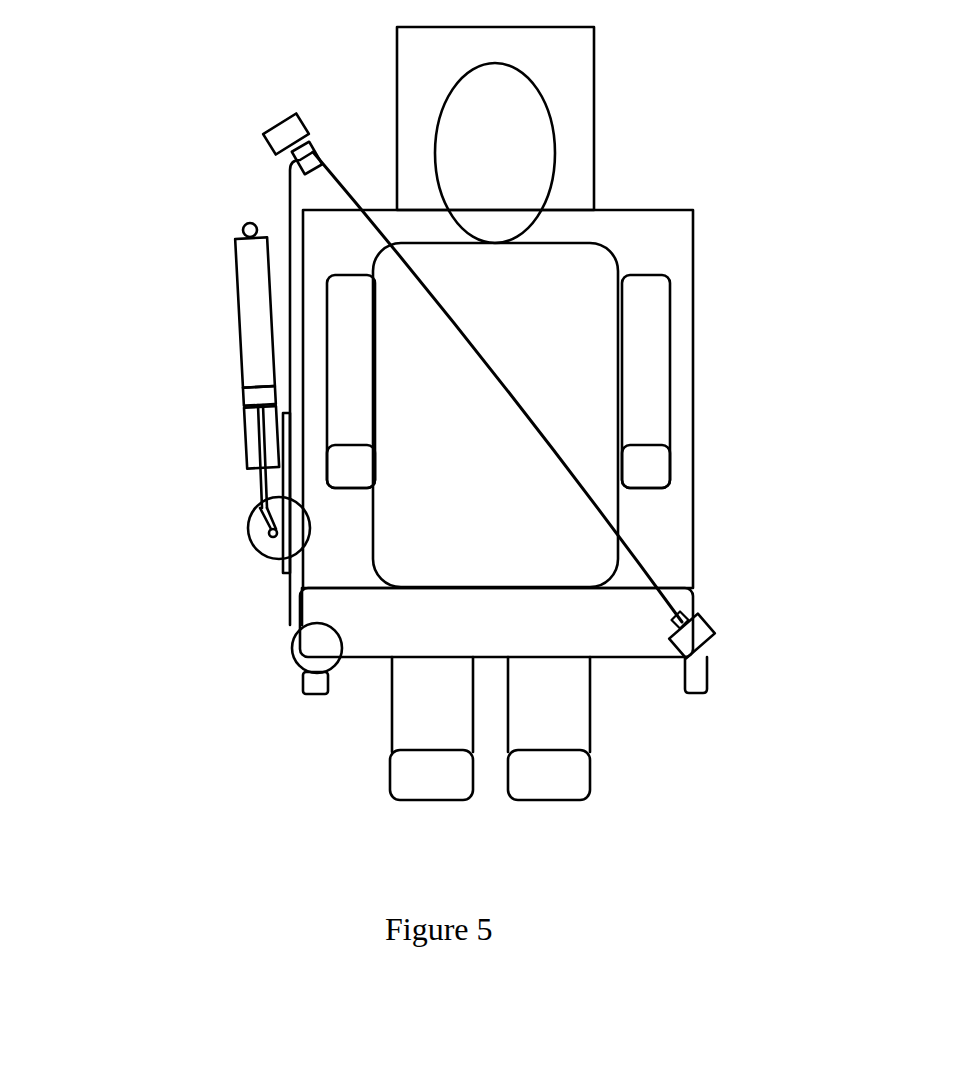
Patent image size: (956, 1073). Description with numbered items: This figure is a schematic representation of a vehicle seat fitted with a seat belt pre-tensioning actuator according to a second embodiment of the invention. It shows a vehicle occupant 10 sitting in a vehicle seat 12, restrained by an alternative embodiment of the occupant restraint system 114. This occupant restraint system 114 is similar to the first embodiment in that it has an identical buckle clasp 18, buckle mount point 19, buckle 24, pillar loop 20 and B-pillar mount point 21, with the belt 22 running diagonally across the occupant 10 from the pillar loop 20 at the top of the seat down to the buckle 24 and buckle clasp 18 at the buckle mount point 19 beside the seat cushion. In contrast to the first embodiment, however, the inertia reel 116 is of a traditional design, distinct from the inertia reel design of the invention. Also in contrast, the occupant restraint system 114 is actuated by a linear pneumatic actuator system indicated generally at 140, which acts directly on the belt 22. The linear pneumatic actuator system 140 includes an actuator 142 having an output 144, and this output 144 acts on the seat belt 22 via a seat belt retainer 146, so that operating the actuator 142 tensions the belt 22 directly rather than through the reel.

The vehicle occupant 10 is at (548, 313).
The vehicle seat 12 is at (711, 206).
The buckle clasp 18 is at (705, 632).
The buckle mount point 19 is at (705, 683).
The pillar loop 20 is at (307, 148).
The B-pillar mount point 21 is at (285, 133).
The belt 22 is at (291, 200).
The buckle 24 is at (690, 615).
The occupant restraint system 114 is at (431, 330).
The inertia reel 116 is at (305, 652).
The linear pneumatic actuator system 140 is at (168, 437).
The actuator 142 is at (240, 313).
The output 144 is at (261, 490).
The seat belt retainer 146 is at (263, 557).